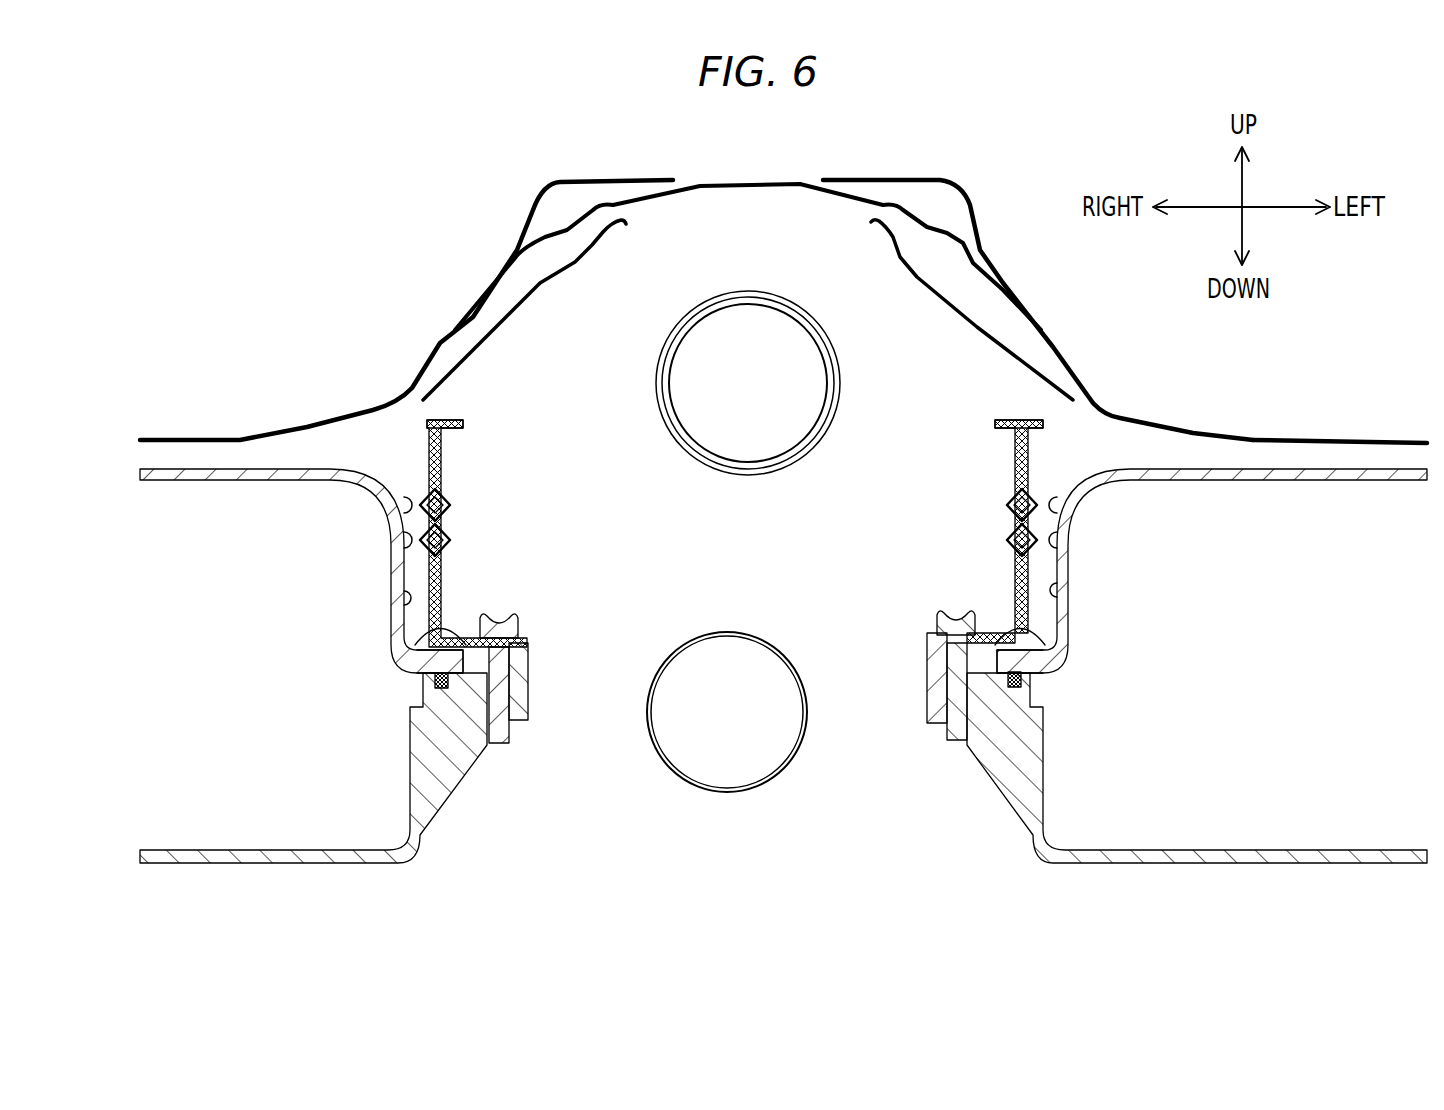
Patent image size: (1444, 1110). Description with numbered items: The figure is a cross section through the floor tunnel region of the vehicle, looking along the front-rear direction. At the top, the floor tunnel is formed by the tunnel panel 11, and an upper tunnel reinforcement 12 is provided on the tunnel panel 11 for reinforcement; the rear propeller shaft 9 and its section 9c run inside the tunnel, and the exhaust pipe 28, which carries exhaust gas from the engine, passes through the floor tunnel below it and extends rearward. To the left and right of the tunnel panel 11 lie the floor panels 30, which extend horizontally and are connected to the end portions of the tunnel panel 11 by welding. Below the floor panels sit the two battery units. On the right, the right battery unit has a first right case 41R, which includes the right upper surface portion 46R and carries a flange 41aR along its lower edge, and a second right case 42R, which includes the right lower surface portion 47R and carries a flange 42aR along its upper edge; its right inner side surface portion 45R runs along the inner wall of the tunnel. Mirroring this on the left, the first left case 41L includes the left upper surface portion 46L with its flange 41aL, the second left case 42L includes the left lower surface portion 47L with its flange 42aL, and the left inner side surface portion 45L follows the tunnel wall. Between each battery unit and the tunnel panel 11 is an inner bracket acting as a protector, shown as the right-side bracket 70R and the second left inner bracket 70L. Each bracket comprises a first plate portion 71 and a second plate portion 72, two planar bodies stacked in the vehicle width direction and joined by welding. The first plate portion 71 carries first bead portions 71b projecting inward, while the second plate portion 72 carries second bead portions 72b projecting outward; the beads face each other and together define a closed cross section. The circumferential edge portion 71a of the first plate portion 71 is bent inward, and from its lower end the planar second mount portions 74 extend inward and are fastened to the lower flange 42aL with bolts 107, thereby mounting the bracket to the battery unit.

The rear propeller shaft 9 is at (748, 428).
The cross member pipe 9c is at (736, 476).
The tunnel panel 11 is at (433, 361).
The upper tunnel reinforcement 12 is at (893, 248).
The exhaust pipe 28 is at (727, 793).
The floor panel 30 is at (1392, 440).
The first right case 41R is at (301, 510).
The first left case 41L is at (1212, 509).
The right upper surface portion 46R is at (213, 471).
The left upper surface portion 46L is at (1202, 469).
The right inner side surface portion 45R is at (398, 616).
The left inner side surface portion 45L is at (1055, 600).
The flange of first right case 41aR is at (421, 661).
The flange of first left case 41aL is at (1024, 667).
The second right case 42R is at (375, 756).
The second left case 42L is at (1138, 751).
The right lower surface portion 47R is at (220, 867).
The left lower surface portion 47L is at (1236, 867).
The flange of second right case 42aR is at (531, 681).
The flange of second left case 42aL is at (922, 681).
The right attachment structure 70R is at (375, 608).
The second left inner bracket 70L is at (1138, 607).
The first plate portion 71 is at (731, 497).
The circumferential edge portion 71a is at (447, 422).
The first bead portion 71b is at (450, 553).
The second plate portion 72 is at (755, 541).
The second bead portion 72b is at (420, 548).
The second mount portion 74 is at (405, 646).
The bolt 107 is at (496, 744).